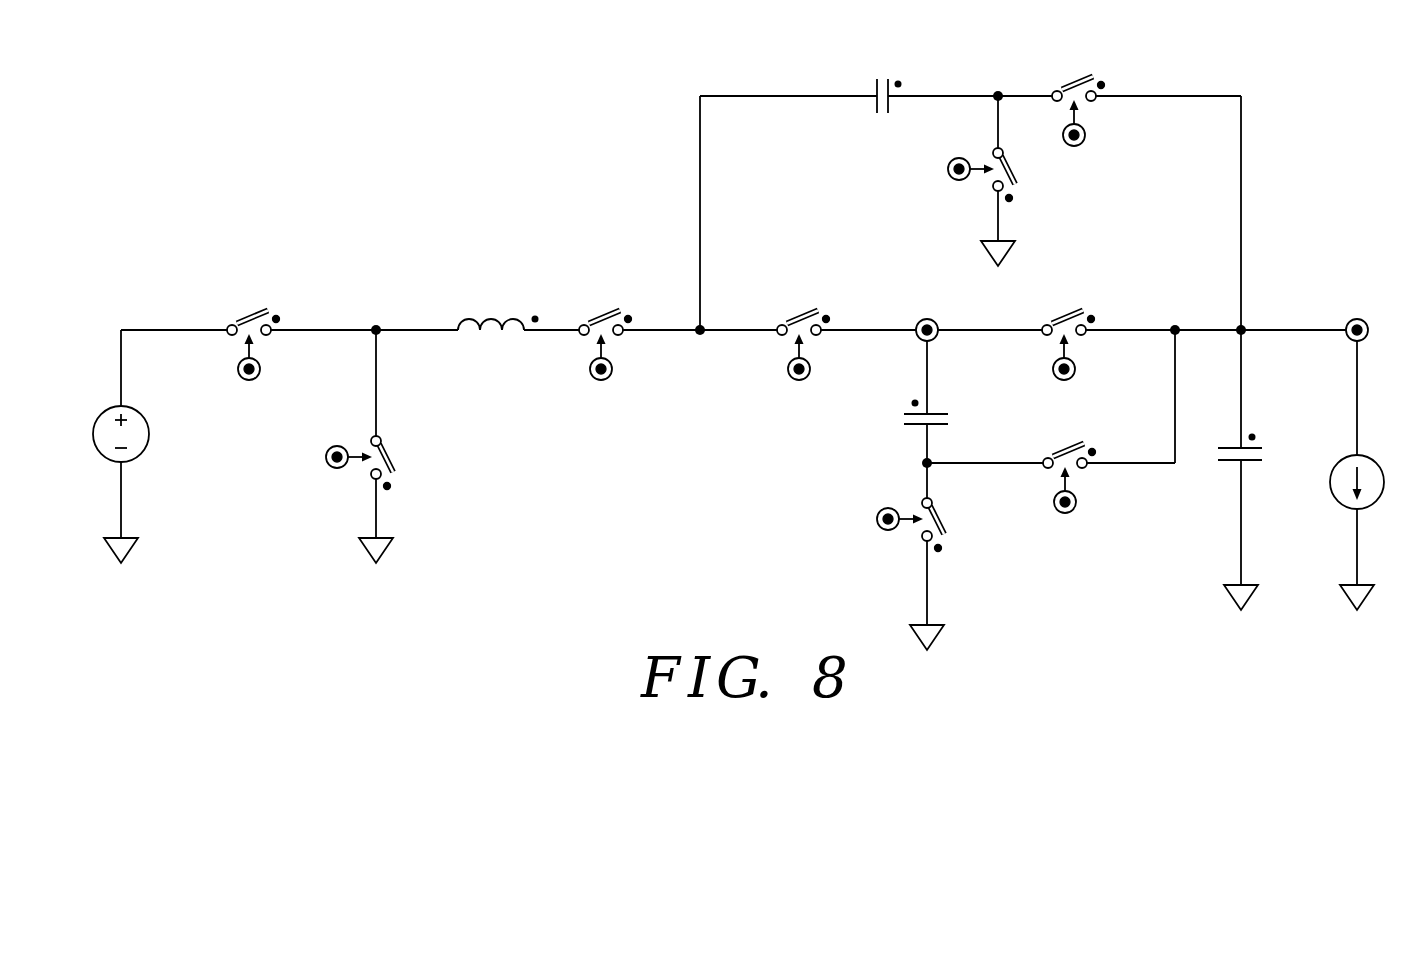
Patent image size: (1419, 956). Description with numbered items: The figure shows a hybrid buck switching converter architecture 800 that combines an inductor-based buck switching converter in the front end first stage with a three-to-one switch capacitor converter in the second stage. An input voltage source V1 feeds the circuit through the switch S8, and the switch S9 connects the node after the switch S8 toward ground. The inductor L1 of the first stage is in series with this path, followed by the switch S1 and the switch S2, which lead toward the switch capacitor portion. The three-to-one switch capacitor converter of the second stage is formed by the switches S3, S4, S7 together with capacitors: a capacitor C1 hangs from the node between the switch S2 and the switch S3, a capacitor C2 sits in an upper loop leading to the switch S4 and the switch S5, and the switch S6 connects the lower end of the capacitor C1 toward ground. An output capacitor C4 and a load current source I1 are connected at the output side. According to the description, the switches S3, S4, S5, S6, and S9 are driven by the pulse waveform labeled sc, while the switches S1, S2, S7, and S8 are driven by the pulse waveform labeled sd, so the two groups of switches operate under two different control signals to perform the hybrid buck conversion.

The Hybrid buck switching converter architecture 800 is at (226, 200).
The input voltage source V1 is at (136, 434).
The switch S8 is at (254, 333).
The switch S9 is at (373, 456).
The inductor L1 is at (498, 311).
The switch S1 is at (607, 333).
The switch S2 is at (805, 334).
The switch S3 is at (1070, 334).
The switch S4 is at (1080, 99).
The switch S5 is at (998, 169).
The switch S6 is at (927, 519).
The switch S7 is at (1070, 468).
The capacitor C1 is at (914, 429).
The capacitor C2 is at (885, 79).
The output capacitor C4 is at (1255, 458).
The load current source I1 is at (1371, 482).